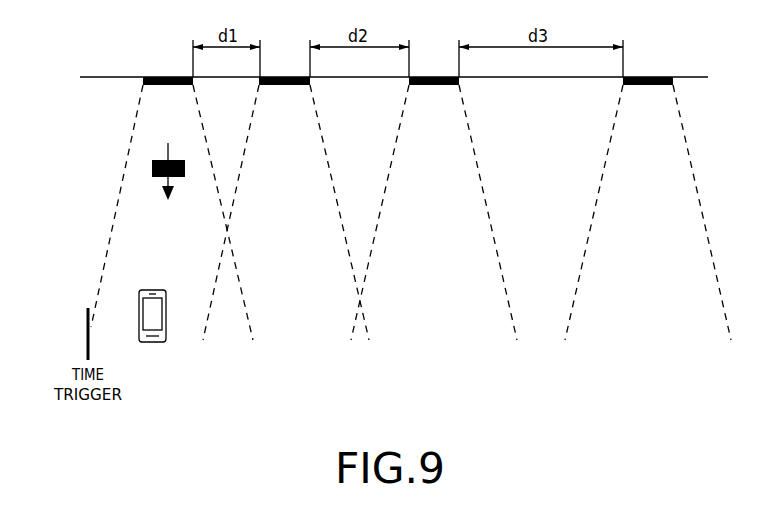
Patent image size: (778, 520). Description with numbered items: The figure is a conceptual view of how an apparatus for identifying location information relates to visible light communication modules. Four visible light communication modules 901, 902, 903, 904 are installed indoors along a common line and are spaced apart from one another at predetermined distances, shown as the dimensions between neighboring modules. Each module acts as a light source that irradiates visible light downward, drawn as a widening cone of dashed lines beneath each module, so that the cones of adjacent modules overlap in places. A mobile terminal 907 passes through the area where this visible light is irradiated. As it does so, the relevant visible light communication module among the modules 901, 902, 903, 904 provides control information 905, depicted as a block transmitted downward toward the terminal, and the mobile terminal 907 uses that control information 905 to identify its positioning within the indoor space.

The visible light communication module 901 is at (170, 85).
The visible light communication module 902 is at (283, 85).
The visible light communication module 903 is at (435, 85).
The visible light communication module 904 is at (648, 85).
The control information 905 is at (152, 164).
The mobile terminal 907 is at (151, 290).